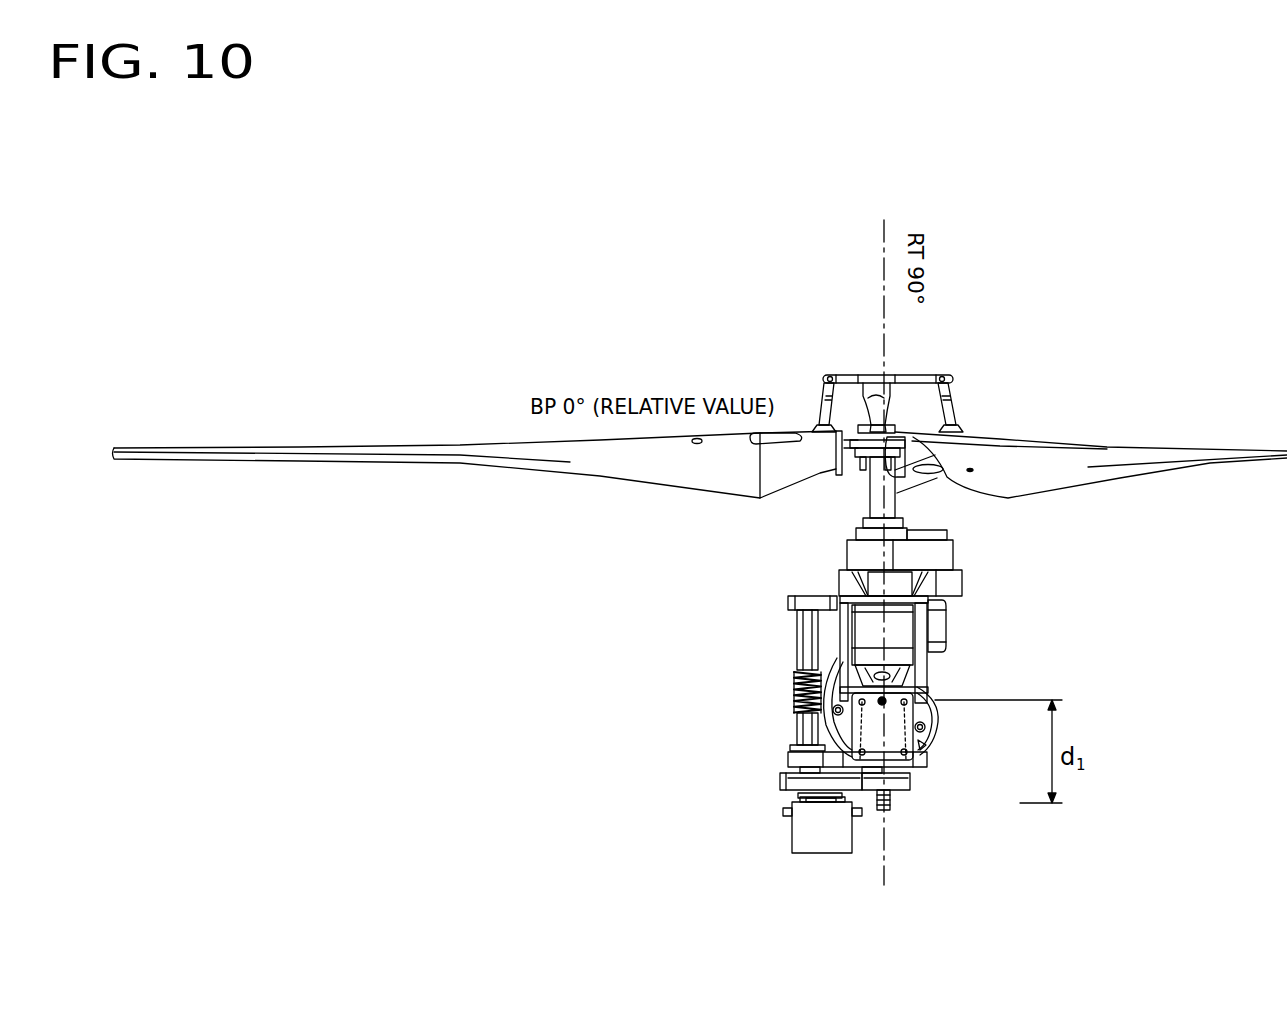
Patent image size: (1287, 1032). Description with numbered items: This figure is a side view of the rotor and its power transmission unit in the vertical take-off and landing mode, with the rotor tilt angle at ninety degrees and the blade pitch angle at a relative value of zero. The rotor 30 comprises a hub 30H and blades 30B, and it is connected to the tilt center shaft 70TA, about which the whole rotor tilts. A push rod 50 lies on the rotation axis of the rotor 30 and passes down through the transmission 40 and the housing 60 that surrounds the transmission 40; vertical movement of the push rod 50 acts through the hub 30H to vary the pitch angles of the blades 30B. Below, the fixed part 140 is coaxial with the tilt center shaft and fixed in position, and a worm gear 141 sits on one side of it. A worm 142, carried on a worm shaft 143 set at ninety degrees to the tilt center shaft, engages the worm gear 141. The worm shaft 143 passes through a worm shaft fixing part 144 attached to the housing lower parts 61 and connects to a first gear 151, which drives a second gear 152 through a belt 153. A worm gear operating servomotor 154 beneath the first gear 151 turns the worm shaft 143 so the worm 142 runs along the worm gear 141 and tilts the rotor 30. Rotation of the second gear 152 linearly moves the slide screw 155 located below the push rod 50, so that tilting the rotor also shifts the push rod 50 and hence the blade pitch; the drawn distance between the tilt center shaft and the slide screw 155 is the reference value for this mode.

The rotor 30 is at (1120, 328).
The hub 30H is at (948, 377).
The blades 30B is at (1108, 447).
The push rod 50 is at (949, 407).
The housing 60 is at (961, 582).
The transmission 40 is at (940, 628).
The fixed part 140 is at (936, 681).
The tilt center shaft 70TA is at (887, 702).
The housing lower parts 61 is at (923, 750).
The worm gear 141 is at (836, 658).
The worm 142 is at (796, 682).
The worm shaft 143 is at (801, 728).
The worm shaft fixing part 144 is at (790, 757).
The first gear 151 is at (782, 775).
The second gear 152 is at (900, 796).
The belt 153 is at (785, 790).
The worm gear operating servomotor 154 is at (822, 840).
The slide screw 155 is at (890, 810).